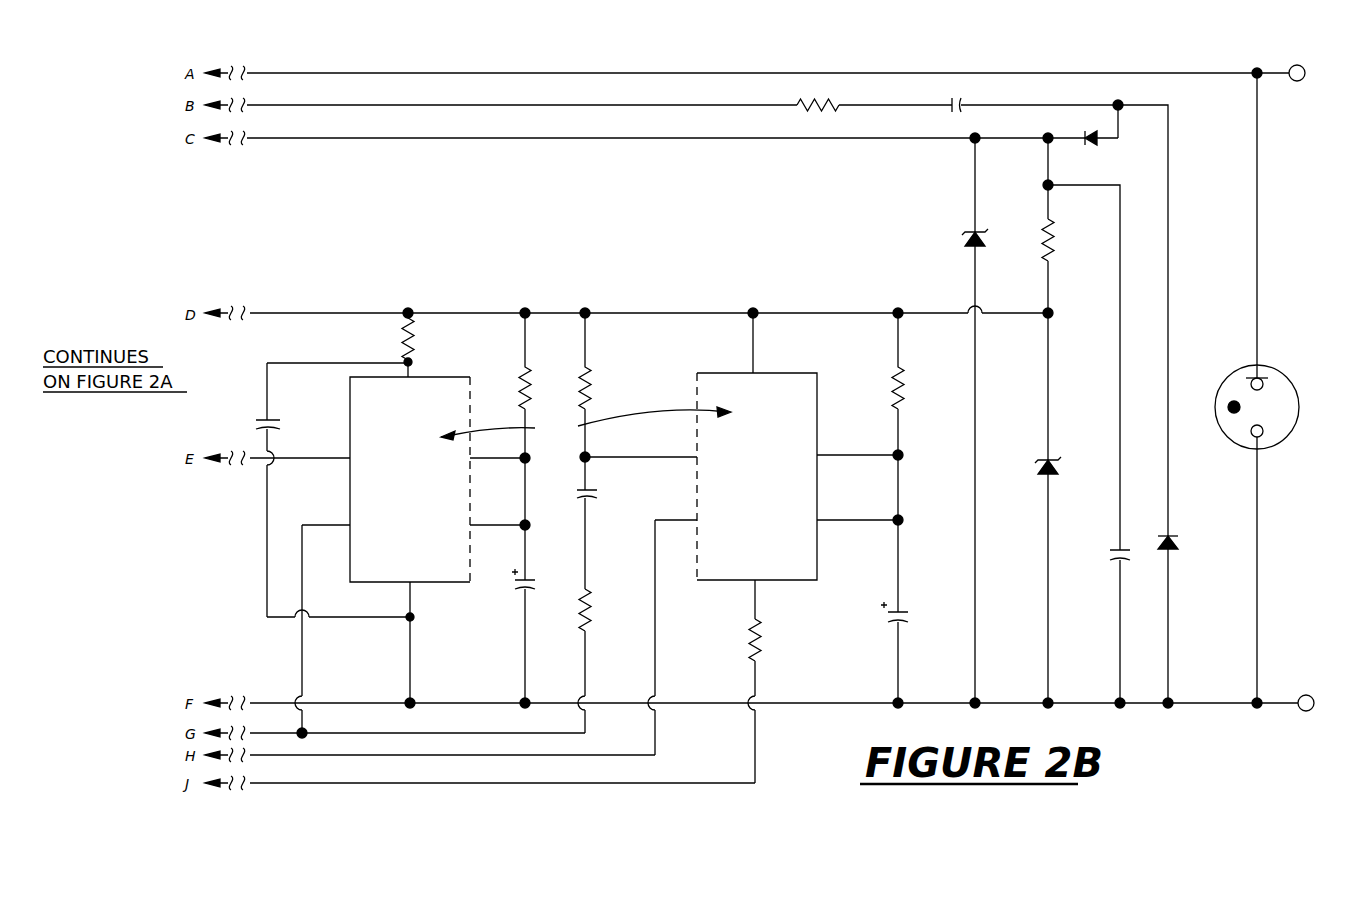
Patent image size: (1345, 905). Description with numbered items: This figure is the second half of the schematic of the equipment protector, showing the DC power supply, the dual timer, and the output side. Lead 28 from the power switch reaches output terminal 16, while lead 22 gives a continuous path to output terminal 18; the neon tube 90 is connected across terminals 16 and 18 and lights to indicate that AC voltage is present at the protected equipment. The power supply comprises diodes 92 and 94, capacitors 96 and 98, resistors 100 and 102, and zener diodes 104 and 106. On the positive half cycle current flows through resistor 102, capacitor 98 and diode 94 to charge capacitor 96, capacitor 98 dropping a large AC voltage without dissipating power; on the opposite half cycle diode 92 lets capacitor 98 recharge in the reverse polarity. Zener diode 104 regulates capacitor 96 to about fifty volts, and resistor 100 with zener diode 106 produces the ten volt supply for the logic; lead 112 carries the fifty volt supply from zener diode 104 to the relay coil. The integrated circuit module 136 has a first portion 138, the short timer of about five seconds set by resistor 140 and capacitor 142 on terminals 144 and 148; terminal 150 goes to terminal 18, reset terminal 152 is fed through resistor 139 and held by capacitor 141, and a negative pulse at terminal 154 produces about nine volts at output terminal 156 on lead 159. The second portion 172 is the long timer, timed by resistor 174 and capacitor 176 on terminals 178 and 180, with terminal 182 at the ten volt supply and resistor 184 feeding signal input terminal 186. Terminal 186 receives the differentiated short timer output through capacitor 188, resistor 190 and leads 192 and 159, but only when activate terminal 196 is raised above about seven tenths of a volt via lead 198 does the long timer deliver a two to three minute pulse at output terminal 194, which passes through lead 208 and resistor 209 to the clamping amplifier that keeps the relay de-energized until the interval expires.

The output terminal 16 is at (1297, 64).
The output terminal 18 is at (1306, 710).
The conducting path or lead 22 is at (284, 699).
The conducting path or lead 28 is at (296, 66).
The neon tube 90 is at (1222, 377).
The diode 92 is at (1168, 544).
The diode 94 is at (1098, 144).
The capacitor 96 is at (1114, 548).
The capacitor 98 is at (958, 96).
The resistor 100 is at (1050, 250).
The resistor 102 is at (835, 96).
The zener diode 104 is at (962, 242).
The zener diode 106 is at (1044, 466).
The lead 112 is at (288, 124).
The integrated circuit module 136 is at (586, 423).
The first portion of integrated circuit module 138 is at (372, 388).
The resistor 139 is at (414, 322).
The resistor 140 is at (522, 378).
The capacitor 141 is at (258, 416).
The capacitor 142 is at (524, 586).
The terminal of module 144 is at (475, 461).
The terminal of module 148 is at (475, 528).
The terminal of module 150 is at (408, 584).
The reset terminal of module 152 is at (412, 372).
The input terminal of module 154 is at (348, 458).
The output terminal of module 156 is at (350, 528).
The lead 159 is at (304, 672).
The second portion of integrated circuit module 172 is at (726, 384).
The resistor 174 is at (900, 372).
The capacitor 176 is at (908, 626).
The terminal of module 178 is at (818, 454).
The terminal of module 180 is at (818, 520).
The terminal of module 182 is at (758, 372).
The resistor 184 is at (588, 376).
The signal input terminal of module 186 is at (696, 456).
The capacitor 188 is at (590, 494).
The resistor 190 is at (588, 596).
The lead 192 is at (351, 729).
The output terminal of module 194 is at (758, 583).
The reset or activate terminal of module 196 is at (694, 526).
The lead 198 is at (342, 757).
The lead 208 is at (346, 785).
The resistor 209 is at (760, 654).